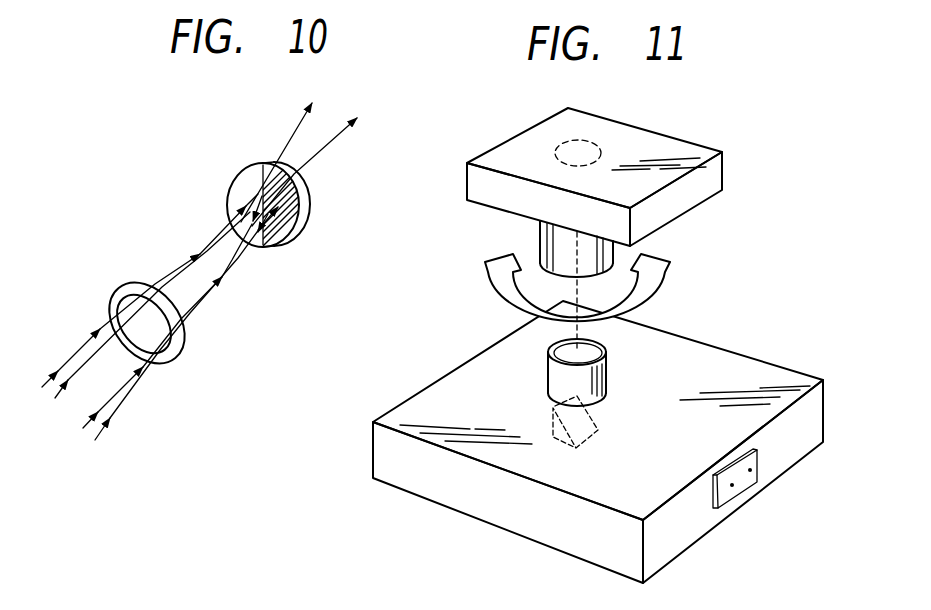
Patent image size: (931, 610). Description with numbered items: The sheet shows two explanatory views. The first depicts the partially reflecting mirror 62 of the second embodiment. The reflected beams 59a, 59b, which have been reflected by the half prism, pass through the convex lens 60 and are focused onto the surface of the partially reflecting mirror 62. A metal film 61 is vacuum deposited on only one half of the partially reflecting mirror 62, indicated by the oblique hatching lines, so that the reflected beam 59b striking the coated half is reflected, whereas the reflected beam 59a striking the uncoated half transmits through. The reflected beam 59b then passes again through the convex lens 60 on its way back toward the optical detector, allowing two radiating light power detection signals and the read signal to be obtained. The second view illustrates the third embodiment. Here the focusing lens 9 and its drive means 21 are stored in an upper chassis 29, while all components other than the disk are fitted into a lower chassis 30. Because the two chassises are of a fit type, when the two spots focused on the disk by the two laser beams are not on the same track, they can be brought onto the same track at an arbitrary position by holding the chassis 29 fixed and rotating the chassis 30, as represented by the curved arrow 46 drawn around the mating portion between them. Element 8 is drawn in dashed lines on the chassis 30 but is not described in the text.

In FIG. 11, the magnet 8 is at (592, 407).
In FIG. 11, the focusing lens 9 is at (592, 141).
In FIG. 11, the drive means 21 is at (757, 483).
In FIG. 11, the chassis 29 is at (722, 172).
In FIG. 11, the chassis 30 is at (823, 431).
In FIG. 11, the arrow 46 is at (665, 282).
In FIG. 10, the reflected beam 59a is at (320, 150).
In FIG. 10, the reflected beam 59b is at (238, 260).
In FIG. 10, the convex lens 60 is at (187, 339).
In FIG. 10, the metal film 61 is at (290, 244).
In FIG. 10, the partially reflecting mirror 62 is at (238, 178).